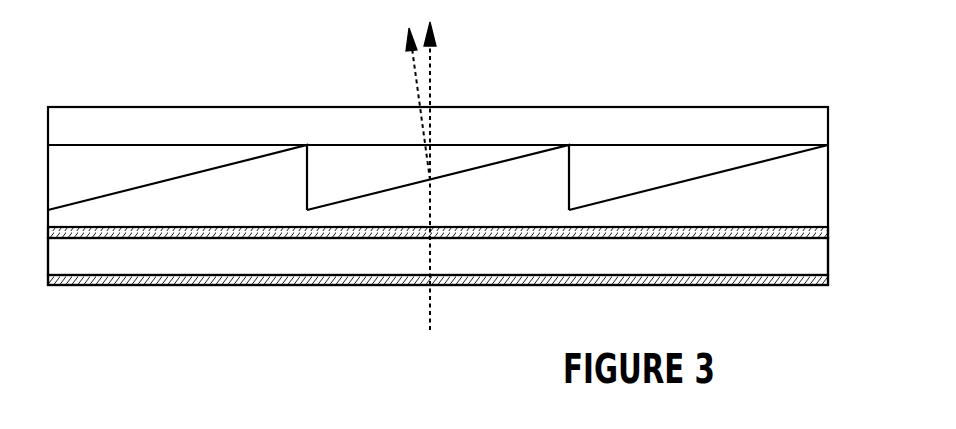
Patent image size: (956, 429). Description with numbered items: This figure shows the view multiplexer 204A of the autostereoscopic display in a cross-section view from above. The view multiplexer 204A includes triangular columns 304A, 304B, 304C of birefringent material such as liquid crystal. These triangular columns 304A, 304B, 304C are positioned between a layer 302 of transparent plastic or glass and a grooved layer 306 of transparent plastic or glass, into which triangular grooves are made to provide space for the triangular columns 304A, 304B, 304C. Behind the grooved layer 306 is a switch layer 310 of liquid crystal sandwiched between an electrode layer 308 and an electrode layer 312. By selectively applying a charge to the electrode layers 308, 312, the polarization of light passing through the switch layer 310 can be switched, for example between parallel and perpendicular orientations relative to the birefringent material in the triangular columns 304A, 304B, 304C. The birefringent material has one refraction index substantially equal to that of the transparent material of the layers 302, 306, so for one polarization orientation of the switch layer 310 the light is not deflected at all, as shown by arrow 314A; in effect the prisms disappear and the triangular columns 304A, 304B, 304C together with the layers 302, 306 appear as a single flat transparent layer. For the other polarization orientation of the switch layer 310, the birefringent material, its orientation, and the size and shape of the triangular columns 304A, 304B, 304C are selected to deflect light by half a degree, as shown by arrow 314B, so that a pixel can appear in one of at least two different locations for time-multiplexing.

The view multiplexer 204A is at (566, 49).
The layer 302 is at (438, 131).
The triangular column 304A is at (150, 174).
The triangular column 304B is at (368, 174).
The triangular column 304C is at (628, 174).
The grooved layer 306 is at (726, 216).
The electrode layer 308 is at (783, 227).
The switch layer 310 is at (438, 256).
The electrode layer 312 is at (785, 287).
The arrow 314A is at (431, 68).
The arrow 314B is at (418, 72).